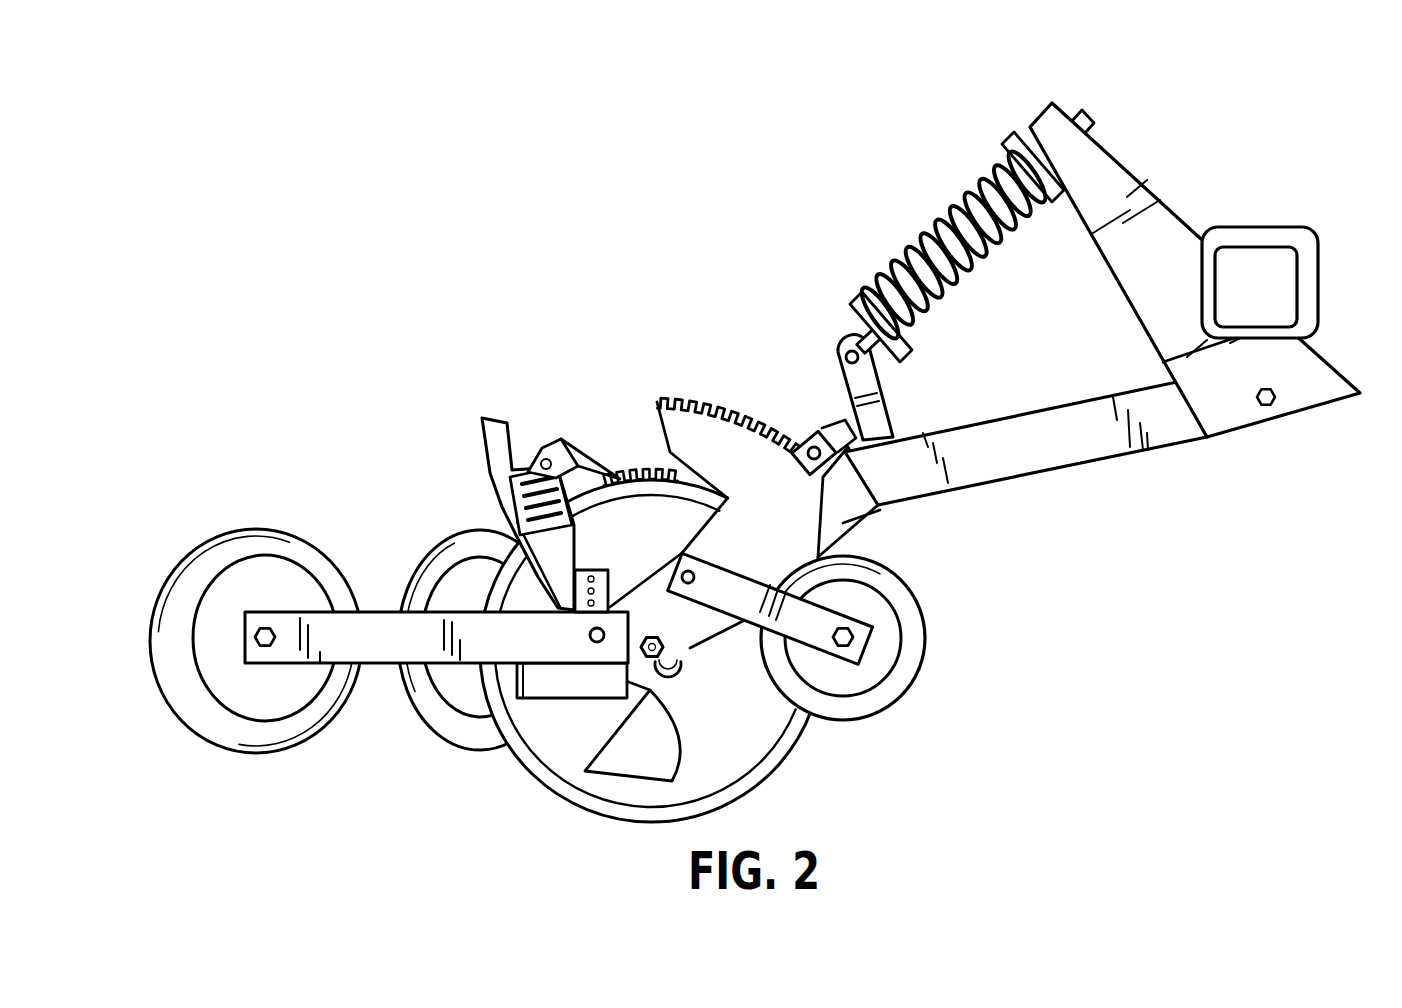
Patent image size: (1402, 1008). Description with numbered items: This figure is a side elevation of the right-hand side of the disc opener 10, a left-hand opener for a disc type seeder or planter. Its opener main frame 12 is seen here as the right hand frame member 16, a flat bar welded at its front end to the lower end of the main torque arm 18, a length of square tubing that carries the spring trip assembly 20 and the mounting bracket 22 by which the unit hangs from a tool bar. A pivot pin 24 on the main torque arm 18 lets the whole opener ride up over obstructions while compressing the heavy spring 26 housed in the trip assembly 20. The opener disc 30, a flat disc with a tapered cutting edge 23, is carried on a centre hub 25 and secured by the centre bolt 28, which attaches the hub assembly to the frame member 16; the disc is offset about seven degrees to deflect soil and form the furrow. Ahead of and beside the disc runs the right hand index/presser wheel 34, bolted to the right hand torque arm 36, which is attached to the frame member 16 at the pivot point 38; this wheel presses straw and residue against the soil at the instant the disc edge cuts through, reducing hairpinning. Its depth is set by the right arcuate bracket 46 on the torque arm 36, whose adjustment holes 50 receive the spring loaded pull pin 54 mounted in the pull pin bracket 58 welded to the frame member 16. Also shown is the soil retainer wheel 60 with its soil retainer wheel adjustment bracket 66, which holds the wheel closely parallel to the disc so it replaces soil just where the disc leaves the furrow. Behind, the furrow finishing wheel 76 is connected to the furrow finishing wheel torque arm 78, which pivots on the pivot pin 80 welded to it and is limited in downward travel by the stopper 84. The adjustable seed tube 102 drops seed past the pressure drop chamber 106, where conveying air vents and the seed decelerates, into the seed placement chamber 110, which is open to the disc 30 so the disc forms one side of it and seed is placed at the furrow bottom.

The disc opener 10 is at (648, 216).
The opener main frame 12 is at (930, 515).
The right hand frame member 16 is at (655, 607).
The main torque arm 18 is at (1060, 450).
The spring trip assembly 20 is at (1078, 95).
The mounting bracket 22 is at (1140, 188).
The tapered cutting edge 23 is at (767, 760).
The pivot pin 24 is at (1270, 406).
The centre hub 25 is at (675, 680).
The heavy spring 26 is at (953, 210).
The centre bolt 28 is at (662, 641).
The opener disc 30 is at (760, 717).
The right hand index/presser wheel 34 is at (920, 635).
The right hand torque arm 36 is at (803, 627).
The pivot point 38 is at (695, 575).
The right arcuate bracket 46 is at (662, 425).
The adjustment holes 50 is at (716, 400).
The spring loaded pull pin 54 is at (795, 455).
The pull pin bracket 58 is at (836, 420).
The soil retainer wheel 60 is at (470, 540).
The soil retainer wheel adjustment bracket 66 is at (630, 457).
The furrow finishing wheel 76 is at (278, 540).
The furrow finishing wheel torque arm 78 is at (405, 627).
The pivot pin 80 is at (590, 635).
The stopper 84 is at (563, 683).
The seed tube 102 is at (490, 437).
The pressure drop chamber 106 is at (523, 467).
The seed placement chamber 110 is at (617, 763).